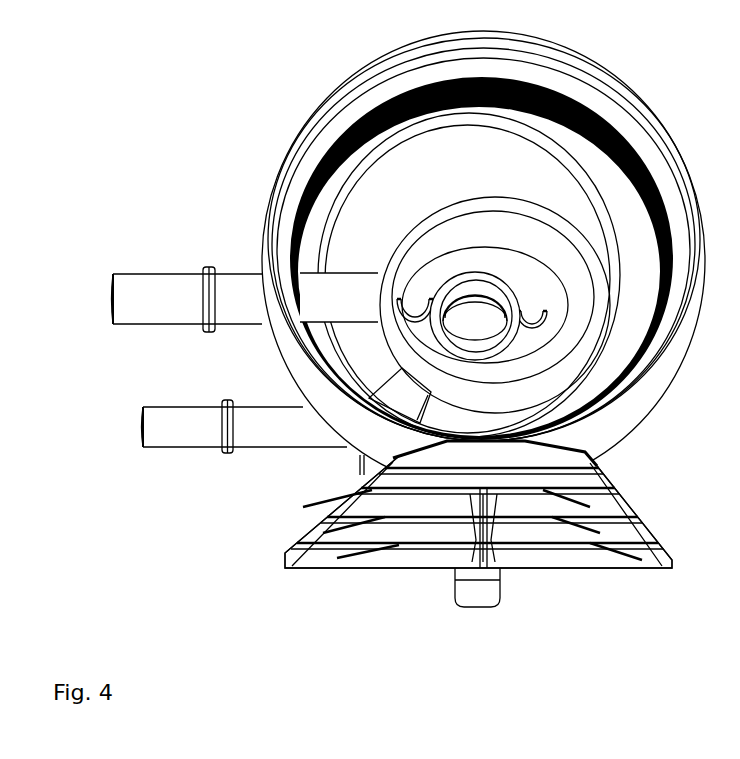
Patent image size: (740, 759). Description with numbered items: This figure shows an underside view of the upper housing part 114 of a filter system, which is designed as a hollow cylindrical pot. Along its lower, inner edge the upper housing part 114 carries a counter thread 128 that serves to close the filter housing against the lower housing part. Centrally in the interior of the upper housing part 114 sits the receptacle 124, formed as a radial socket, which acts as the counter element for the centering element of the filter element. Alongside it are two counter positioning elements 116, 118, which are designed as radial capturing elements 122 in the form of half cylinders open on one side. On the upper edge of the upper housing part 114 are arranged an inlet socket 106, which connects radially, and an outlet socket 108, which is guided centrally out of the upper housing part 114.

The inlet socket 106 is at (185, 427).
The outlet socket 108 is at (163, 300).
The upper housing part 114 is at (440, 260).
The counter positioning element 116 is at (380, 268).
The counter positioning element 118 is at (570, 271).
The radial capturing element 122 is at (432, 302).
The receptacle 124 is at (450, 218).
The counter thread 128 is at (395, 50).